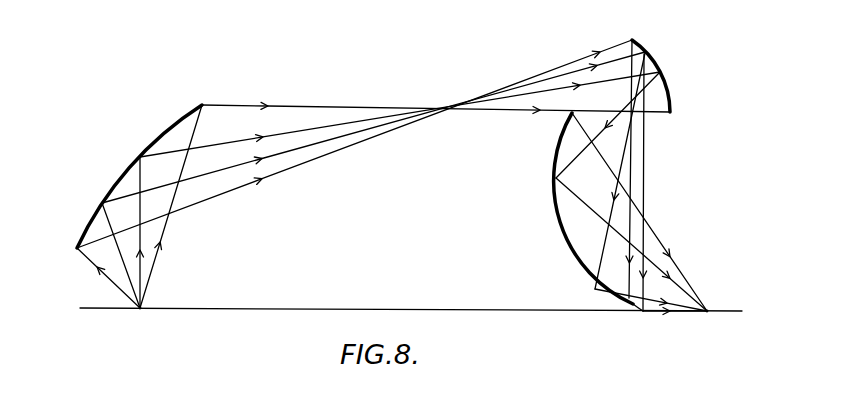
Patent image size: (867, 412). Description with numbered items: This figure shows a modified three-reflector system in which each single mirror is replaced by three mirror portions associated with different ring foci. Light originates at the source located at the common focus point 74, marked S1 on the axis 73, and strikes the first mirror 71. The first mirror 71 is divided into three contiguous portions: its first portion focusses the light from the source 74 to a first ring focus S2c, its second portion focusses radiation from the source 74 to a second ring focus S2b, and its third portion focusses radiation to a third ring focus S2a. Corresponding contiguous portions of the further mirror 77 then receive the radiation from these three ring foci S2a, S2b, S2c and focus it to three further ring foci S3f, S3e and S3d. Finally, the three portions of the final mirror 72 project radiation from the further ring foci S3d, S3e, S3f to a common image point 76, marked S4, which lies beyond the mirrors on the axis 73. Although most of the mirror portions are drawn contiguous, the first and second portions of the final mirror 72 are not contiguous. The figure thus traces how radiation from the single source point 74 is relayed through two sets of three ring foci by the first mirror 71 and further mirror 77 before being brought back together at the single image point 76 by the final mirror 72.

The first mirror 71 is at (170, 128).
The final mirror 72 is at (561, 232).
The axis 73 is at (321, 287).
The common focus point 74 is at (143, 307).
The common image point 76 is at (708, 309).
The further mirror 77 is at (631, 24).
The source point S1 is at (142, 325).
The third ring focus S2a is at (424, 107).
The second ring focus S2b is at (457, 106).
The first ring focus S2c is at (490, 95).
The further ring focus S3d is at (640, 135).
The further ring focus S3e is at (637, 113).
The further ring focus S3f is at (640, 155).
The final image point S4 is at (714, 334).